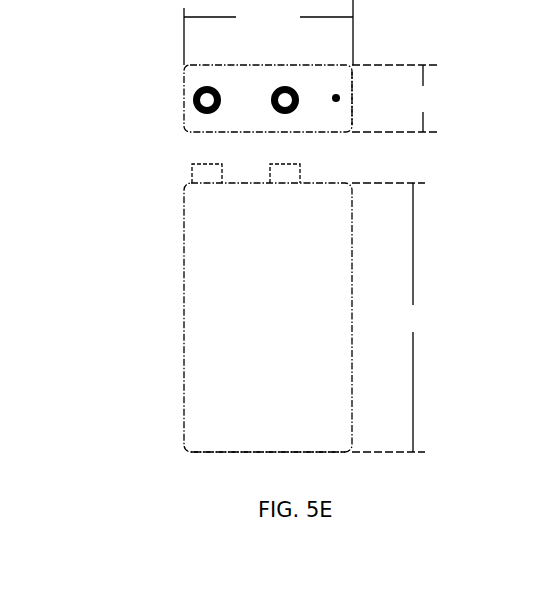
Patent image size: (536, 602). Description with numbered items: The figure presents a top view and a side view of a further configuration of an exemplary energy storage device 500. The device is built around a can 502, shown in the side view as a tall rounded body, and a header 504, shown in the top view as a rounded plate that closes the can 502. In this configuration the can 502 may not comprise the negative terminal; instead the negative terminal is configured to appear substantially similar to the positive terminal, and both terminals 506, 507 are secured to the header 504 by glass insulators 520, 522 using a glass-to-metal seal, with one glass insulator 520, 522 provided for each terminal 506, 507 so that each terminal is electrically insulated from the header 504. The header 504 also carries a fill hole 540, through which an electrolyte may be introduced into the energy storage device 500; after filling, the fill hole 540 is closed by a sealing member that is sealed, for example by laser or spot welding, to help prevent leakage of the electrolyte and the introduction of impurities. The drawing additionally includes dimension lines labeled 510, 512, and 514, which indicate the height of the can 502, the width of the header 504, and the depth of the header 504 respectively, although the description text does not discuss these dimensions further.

The energy storage device 500 is at (129, 303).
The can 502 is at (169, 464).
The header 504 is at (354, 51).
The terminal 506 is at (181, 72).
The terminal 507 is at (300, 112).
The height dimension 510 is at (390, 317).
The width dimension 512 is at (268, 32).
The depth dimension 514 is at (395, 98).
The glass insulator 520 is at (179, 138).
The glass insulator 522 is at (277, 83).
The fill hole 540 is at (357, 84).